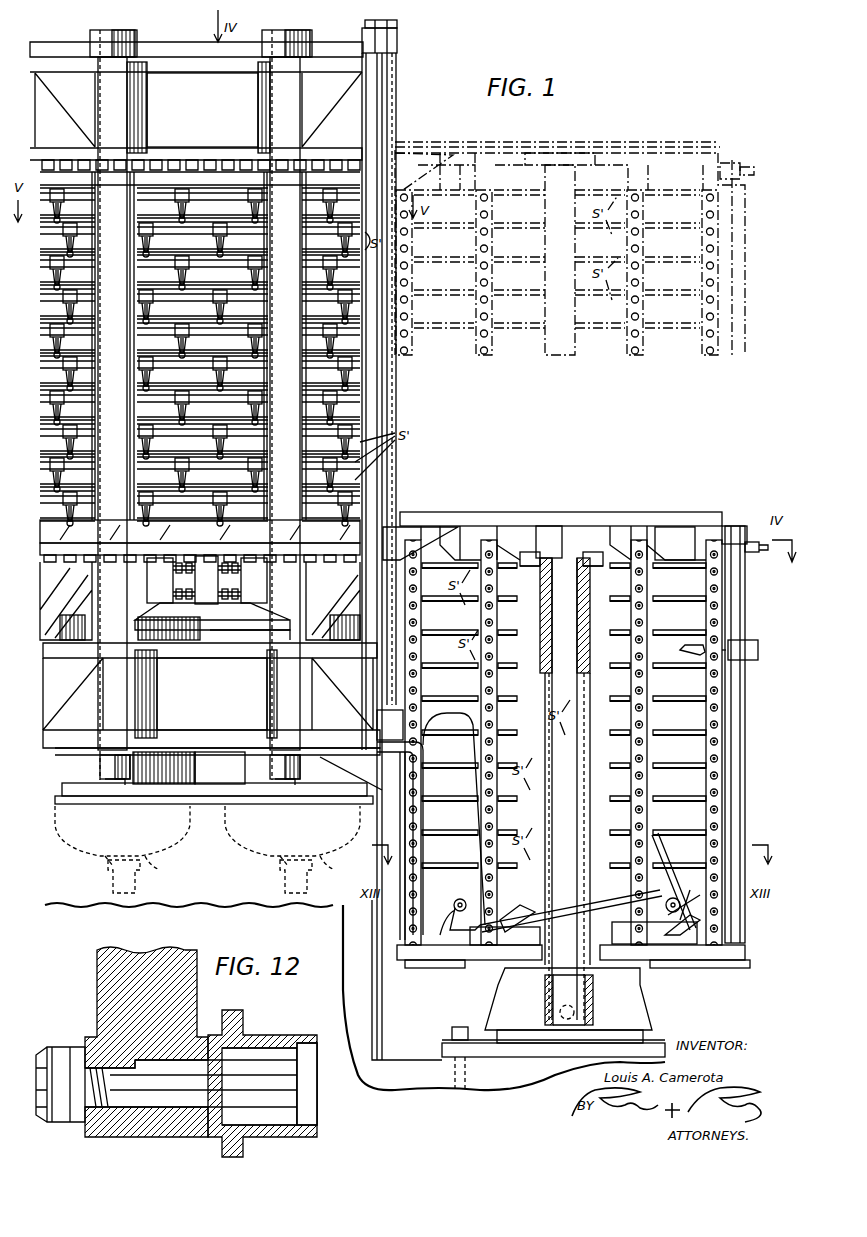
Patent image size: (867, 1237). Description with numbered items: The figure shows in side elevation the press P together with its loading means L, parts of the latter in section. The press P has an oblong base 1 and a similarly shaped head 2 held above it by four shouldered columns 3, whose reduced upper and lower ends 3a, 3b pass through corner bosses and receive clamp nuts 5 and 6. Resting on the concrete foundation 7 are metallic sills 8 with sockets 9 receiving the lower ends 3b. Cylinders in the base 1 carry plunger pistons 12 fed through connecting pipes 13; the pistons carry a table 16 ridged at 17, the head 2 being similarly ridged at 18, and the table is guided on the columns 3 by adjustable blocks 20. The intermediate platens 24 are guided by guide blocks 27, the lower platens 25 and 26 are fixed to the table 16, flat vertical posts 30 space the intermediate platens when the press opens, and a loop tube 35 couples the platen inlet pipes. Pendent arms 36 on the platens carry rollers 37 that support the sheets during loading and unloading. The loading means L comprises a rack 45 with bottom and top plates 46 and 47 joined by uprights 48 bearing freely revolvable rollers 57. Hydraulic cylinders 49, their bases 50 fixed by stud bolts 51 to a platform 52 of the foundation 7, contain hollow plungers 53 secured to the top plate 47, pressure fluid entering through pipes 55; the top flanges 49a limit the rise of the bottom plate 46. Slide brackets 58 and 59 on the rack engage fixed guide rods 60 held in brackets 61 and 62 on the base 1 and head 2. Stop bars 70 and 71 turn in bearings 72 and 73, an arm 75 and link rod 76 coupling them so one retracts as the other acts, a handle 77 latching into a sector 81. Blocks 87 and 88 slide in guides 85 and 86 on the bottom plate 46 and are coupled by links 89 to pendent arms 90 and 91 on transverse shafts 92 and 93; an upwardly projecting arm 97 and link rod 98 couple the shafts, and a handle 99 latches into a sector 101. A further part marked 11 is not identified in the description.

In FIG. 1, the base 1 is at (206, 694).
In FIG. 1, the head 2 is at (198, 107).
In FIG. 1, the shouldered columns 3 is at (196, 410).
In FIG. 1, the upper end of column 3a is at (98, 95).
In FIG. 1, the lower end of column 3b is at (98, 743).
In FIG. 1, the clamp nut 5 is at (90, 38).
In FIG. 1, the clamp nut 6 is at (100, 760).
In FIG. 1, the concrete foundation 7 is at (64, 895).
In FIG. 1, the metallic sills 8 is at (207, 790).
In FIG. 1, the sockets 9 is at (207, 831).
In FIG. 1, the foundation flare 11 is at (160, 870).
In FIG. 1, the plunger pistons 12 is at (205, 190).
In FIG. 1, the connecting pipes 13 is at (112, 880).
In FIG. 1, the table 16 is at (42, 576).
In FIG. 1, the ridges of table 17 is at (214, 565).
In FIG. 1, the ridged bottom face of head 18 is at (216, 160).
In FIG. 1, the adjustable blocks 20 is at (142, 583).
In FIG. 1, the intermediate platens 24 is at (50, 285).
In FIG. 1, the lower platen 25 is at (40, 530).
In FIG. 1, the lower platen 26 is at (40, 546).
In FIG. 1, the guide blocks 27 is at (95, 270).
In FIG. 1, the flat vertical posts 30 is at (95, 312).
In FIG. 1, the loop tube 35 is at (754, 171).
In FIG. 1, the pendent arms 36 is at (78, 224).
In FIG. 12, the pendent arms 36 is at (100, 1005).
In FIG. 12, the roller 37 is at (263, 1045).
In FIG. 1, the rack 45 is at (780, 985).
In FIG. 1, the bottom plate 46 is at (675, 962).
In FIG. 1, the top plate 47 is at (680, 512).
In FIG. 1, the uprights 48 is at (421, 646).
In FIG. 1, the vertical hydraulic cylinders 49 is at (590, 775).
In FIG. 1, the circumferential top flanges 49a is at (530, 555).
In FIG. 1, the cylinder bases 50 is at (512, 997).
In FIG. 1, the stud bolts 51 is at (452, 1036).
In FIG. 1, the platform 52 is at (420, 1060).
In FIG. 1, the hollow plungers 53 is at (545, 611).
In FIG. 1, the pipes 55 is at (593, 1012).
In FIG. 1, the rollers 57 is at (631, 605).
In FIG. 1, the slide bracket 58 is at (383, 710).
In FIG. 1, the slide bracket 59 is at (410, 527).
In FIG. 1, the guide rods 60 is at (396, 393).
In FIG. 1, the bracket 61 is at (392, 780).
In FIG. 1, the bracket 62 is at (397, 30).
In FIG. 1, the stop bar 70 is at (400, 823).
In FIG. 1, the stop bar 71 is at (745, 770).
In FIG. 1, the bearings 72 is at (418, 962).
In FIG. 1, the bearings 73 is at (735, 526).
In FIG. 1, the angular arm 75 is at (752, 552).
In FIG. 1, the horizontal link rod 76 is at (675, 543).
In FIG. 1, the manipulating handle 77 is at (682, 648).
In FIG. 1, the sector 81 is at (758, 650).
In FIG. 1, the guide 85 is at (515, 945).
In FIG. 1, the guide 86 is at (630, 965).
In FIG. 1, the blocks 87 is at (515, 912).
In FIG. 1, the blocks 88 is at (640, 935).
In FIG. 1, the links 89 is at (480, 946).
In FIG. 1, the pendent arm 90 is at (455, 905).
In FIG. 1, the pendent arm 91 is at (685, 922).
In FIG. 1, the transverse shaft 92 is at (460, 898).
In FIG. 1, the transverse shaft 93 is at (666, 906).
In FIG. 1, the upwardly projecting arm 97 is at (686, 886).
In FIG. 1, the link rod 98 is at (618, 898).
In FIG. 1, the manipulating handle 99 is at (658, 840).
In FIG. 1, the sector 101 is at (690, 896).
In FIG. 1, the press P is at (215, 24).
In FIG. 1, the loading means L is at (455, 492).